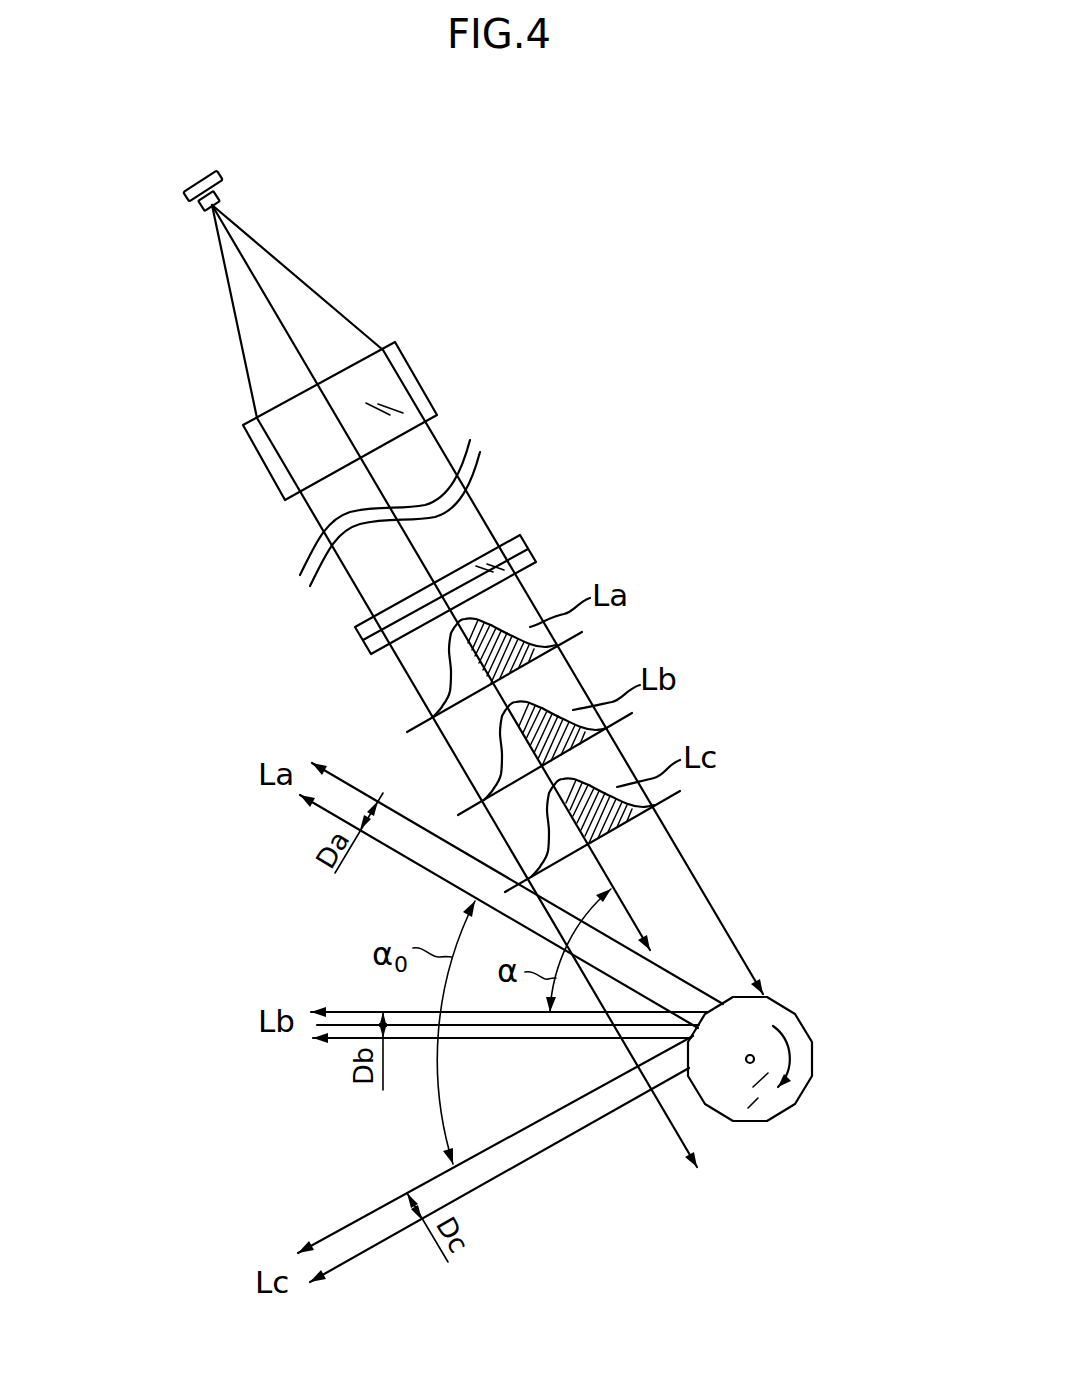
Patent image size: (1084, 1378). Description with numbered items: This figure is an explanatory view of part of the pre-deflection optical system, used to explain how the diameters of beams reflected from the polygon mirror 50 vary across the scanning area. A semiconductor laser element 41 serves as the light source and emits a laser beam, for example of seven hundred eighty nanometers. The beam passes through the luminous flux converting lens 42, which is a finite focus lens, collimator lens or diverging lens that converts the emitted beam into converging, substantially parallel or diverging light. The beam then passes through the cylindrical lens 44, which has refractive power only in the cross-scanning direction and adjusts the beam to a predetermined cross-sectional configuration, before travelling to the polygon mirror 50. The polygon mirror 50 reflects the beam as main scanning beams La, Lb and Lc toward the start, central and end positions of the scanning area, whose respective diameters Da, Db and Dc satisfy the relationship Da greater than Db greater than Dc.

The semiconductor laser element 41 is at (225, 173).
The luminous flux converting lens 42 is at (418, 383).
The cylindrical lens 44 is at (530, 547).
The polygon mirror 50 is at (812, 1058).